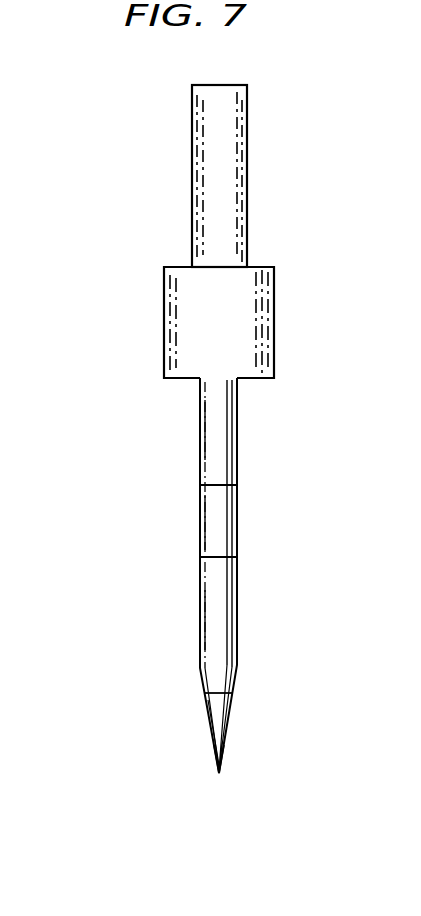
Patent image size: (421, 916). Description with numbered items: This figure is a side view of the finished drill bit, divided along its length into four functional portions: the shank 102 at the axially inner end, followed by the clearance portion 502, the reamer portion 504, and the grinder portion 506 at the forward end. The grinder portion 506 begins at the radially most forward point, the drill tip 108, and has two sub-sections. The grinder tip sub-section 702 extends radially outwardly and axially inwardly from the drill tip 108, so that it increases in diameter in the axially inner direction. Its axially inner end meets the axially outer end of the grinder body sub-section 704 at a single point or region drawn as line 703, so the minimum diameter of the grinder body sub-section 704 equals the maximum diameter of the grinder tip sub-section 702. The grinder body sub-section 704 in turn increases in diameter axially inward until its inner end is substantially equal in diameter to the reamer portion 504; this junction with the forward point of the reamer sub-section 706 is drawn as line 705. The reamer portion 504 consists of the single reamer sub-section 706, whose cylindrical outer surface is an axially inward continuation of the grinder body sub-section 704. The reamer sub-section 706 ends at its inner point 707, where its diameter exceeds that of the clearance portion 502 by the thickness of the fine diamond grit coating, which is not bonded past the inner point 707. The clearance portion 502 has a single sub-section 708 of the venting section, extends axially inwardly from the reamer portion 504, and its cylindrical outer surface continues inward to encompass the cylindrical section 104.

The shank 102 is at (108, 83).
The cylindrical section 104 is at (274, 312).
The drill tip 108 is at (219, 773).
The clearance portion 502 is at (108, 272).
The reamer portion 504 is at (108, 488).
The grinder portion 506 is at (108, 559).
The grinder tip sub-section 702 is at (218, 715).
The line 703 is at (232, 693).
The grinder body sub-section 704 is at (213, 622).
The line 705 is at (237, 557).
The reamer sub-section 706 is at (213, 527).
The inner point 707 is at (237, 485).
The sub-section 708 is at (213, 432).